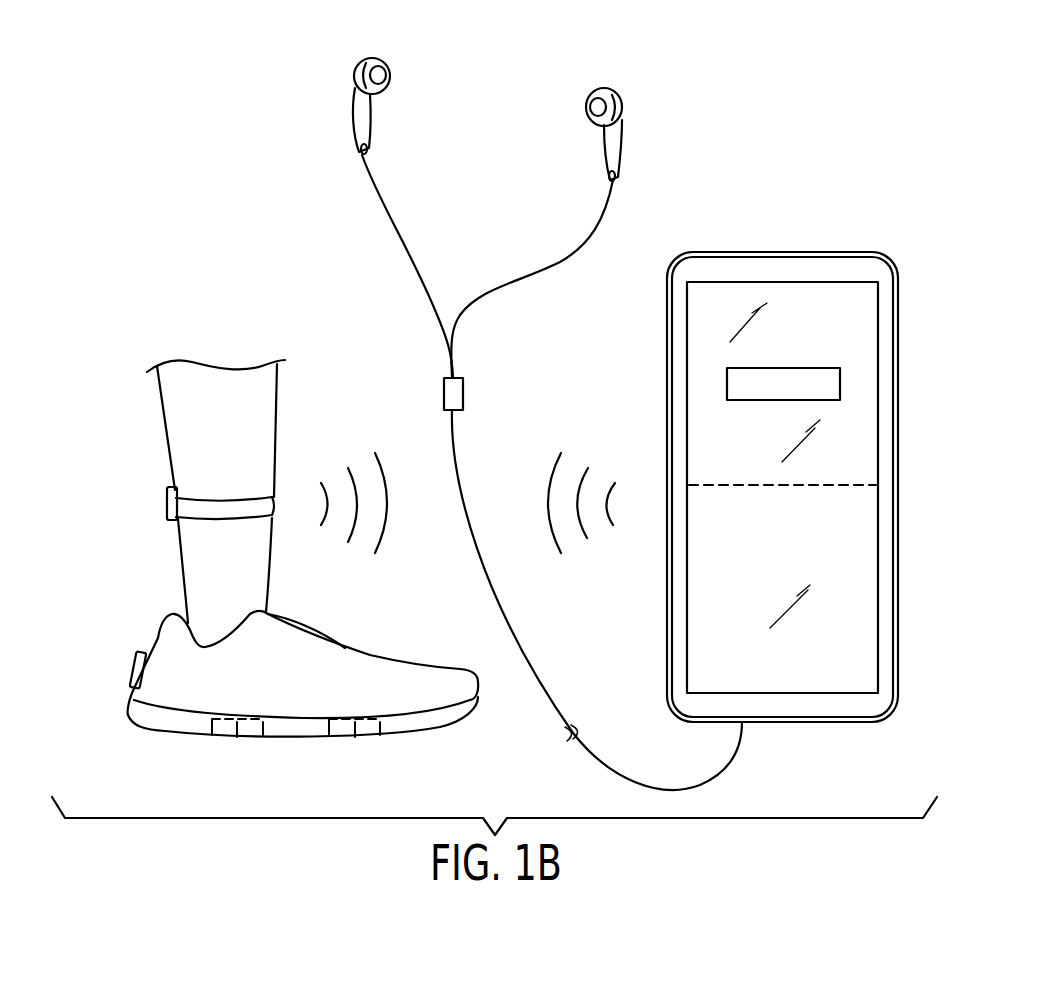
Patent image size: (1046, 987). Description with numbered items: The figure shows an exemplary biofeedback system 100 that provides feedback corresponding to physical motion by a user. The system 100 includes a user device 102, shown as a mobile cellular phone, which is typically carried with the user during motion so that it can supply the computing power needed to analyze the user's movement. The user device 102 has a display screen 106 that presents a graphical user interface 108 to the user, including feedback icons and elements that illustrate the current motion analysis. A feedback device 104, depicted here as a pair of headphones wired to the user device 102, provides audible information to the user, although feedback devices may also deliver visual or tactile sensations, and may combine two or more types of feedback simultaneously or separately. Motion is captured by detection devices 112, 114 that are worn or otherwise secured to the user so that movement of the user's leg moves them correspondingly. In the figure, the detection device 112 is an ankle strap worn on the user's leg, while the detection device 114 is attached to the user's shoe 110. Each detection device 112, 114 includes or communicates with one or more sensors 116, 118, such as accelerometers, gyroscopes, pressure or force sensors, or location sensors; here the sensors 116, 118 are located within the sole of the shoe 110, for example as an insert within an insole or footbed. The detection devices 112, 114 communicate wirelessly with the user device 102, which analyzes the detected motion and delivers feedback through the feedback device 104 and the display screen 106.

The system 100 is at (685, 178).
The user device 102 is at (888, 318).
The feedback device 104 is at (617, 93).
The display screen 106 is at (850, 550).
The graphical user interface 108 is at (840, 385).
The shoe 110 is at (410, 682).
The detection device 112 is at (167, 502).
The detection device 114 is at (132, 668).
The sensor 116 is at (237, 740).
The sensor 118 is at (357, 740).